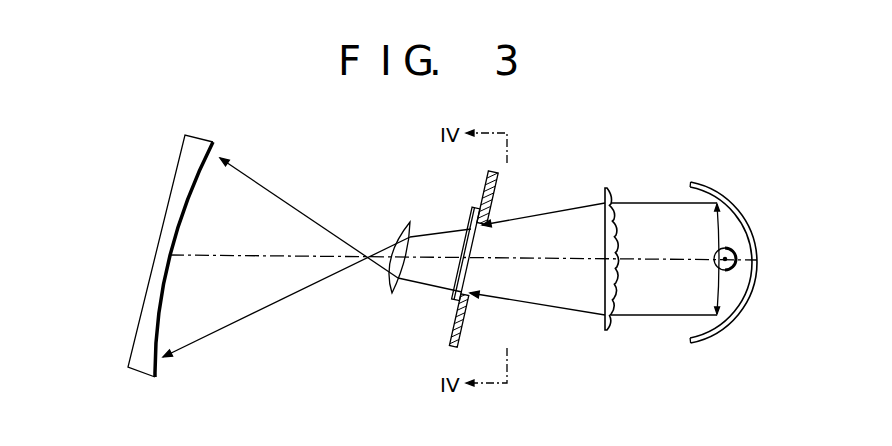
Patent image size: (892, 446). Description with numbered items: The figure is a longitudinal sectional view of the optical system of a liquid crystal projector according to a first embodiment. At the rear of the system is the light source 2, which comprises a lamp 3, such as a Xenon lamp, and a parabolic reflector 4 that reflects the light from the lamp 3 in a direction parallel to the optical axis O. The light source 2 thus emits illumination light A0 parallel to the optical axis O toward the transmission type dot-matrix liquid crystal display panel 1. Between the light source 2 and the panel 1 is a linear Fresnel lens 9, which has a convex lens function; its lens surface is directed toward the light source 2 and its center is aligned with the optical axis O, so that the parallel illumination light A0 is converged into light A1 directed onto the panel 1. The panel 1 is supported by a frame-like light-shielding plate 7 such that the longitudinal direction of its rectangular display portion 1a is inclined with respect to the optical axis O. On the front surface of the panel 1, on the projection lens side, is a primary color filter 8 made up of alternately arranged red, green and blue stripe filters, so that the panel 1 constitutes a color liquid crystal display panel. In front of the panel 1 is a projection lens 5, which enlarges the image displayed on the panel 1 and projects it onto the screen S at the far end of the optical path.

The screen S is at (143, 378).
The projection lens 5 is at (391, 288).
The liquid crystal display panel 1 is at (472, 275).
The display portion 1a is at (480, 237).
The primary color filter 8 is at (471, 216).
The light-shielding plate 7 is at (452, 328).
The converged illumination light A1 is at (541, 215).
The linear Fresnel lens 9 is at (606, 186).
The illumination light A0 is at (648, 203).
The lamp 3 is at (714, 258).
The parabolic reflector 4 is at (742, 217).
The light source 2 is at (713, 341).
The optical axis O is at (652, 262).